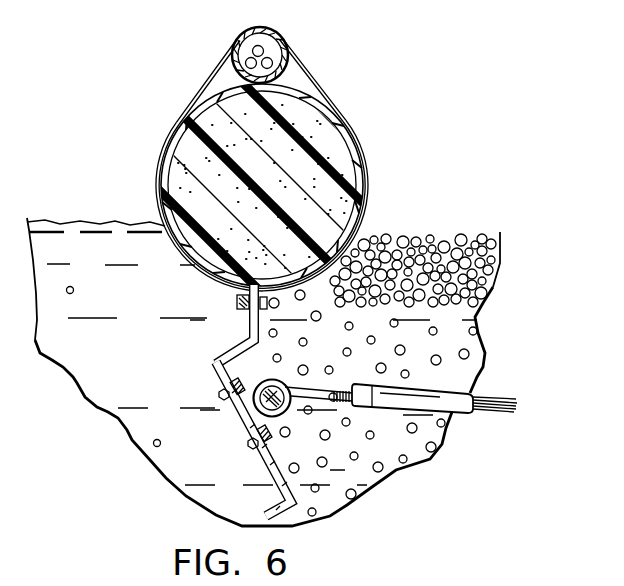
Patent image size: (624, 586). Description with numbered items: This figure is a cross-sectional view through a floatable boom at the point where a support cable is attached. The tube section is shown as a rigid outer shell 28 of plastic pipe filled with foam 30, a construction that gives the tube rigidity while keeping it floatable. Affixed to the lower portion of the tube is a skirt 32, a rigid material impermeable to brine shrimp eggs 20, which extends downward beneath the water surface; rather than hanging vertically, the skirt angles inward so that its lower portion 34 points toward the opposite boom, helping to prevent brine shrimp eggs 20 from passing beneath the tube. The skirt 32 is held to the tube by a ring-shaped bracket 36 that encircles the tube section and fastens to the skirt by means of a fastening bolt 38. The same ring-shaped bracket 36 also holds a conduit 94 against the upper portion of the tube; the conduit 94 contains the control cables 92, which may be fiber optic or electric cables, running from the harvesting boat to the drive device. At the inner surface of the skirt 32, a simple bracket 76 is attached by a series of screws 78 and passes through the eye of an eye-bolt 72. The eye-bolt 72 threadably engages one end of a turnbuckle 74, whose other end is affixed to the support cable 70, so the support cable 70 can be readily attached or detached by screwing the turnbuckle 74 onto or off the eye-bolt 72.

The brine shrimp eggs 20 is at (445, 229).
The outer shell 28 is at (352, 135).
The foam 30 is at (368, 194).
The skirt 32 is at (236, 350).
The lower portion of the skirt 34 is at (305, 495).
The ring-shaped brackets 36 is at (312, 75).
The fastening bolt 38 is at (238, 300).
The support cable 70 is at (502, 394).
The eye-bolt 72 is at (318, 400).
The turnbuckle 74 is at (415, 398).
The bracket 76 is at (248, 436).
The screws 78 is at (220, 386).
The control cables 92 is at (254, 50).
The conduit 94 is at (272, 37).